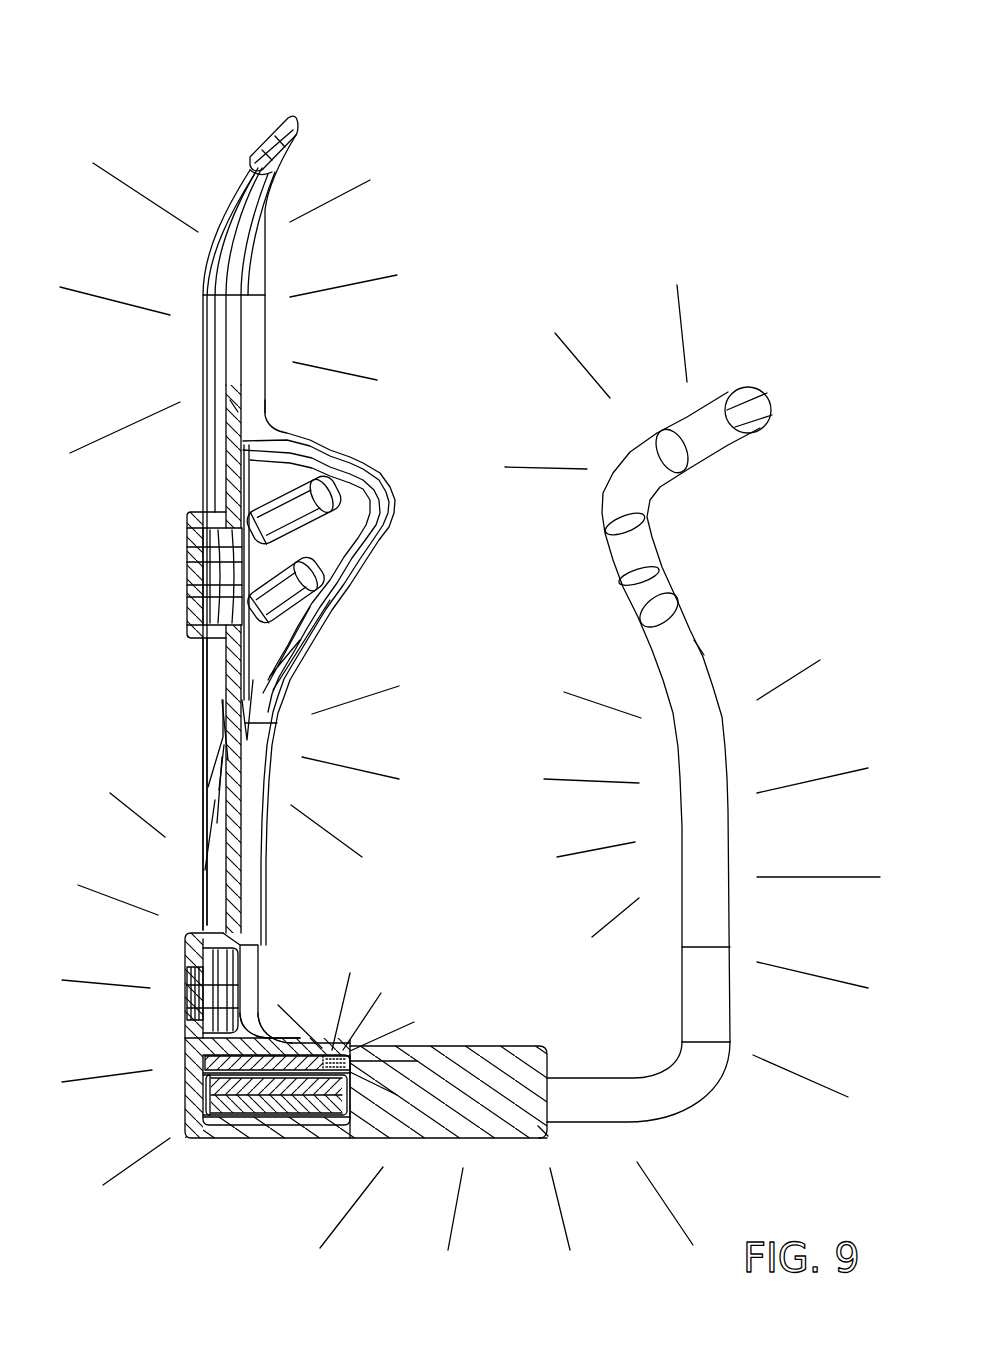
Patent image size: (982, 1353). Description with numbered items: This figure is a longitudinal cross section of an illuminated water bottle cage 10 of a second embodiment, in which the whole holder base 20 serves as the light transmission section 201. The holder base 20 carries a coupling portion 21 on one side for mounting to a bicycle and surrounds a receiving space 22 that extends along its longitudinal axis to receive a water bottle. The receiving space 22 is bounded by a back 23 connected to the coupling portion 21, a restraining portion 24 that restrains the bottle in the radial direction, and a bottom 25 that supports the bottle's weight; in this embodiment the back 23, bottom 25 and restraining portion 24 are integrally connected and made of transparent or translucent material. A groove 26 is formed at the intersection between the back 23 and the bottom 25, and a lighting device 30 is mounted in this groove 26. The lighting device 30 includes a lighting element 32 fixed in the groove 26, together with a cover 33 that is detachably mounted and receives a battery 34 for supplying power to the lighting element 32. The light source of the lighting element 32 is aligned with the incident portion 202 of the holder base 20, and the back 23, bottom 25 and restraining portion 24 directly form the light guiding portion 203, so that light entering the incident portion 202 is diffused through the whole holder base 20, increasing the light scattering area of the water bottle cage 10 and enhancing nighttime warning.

The illuminated water bottle cage 10 is at (357, 92).
The holder base 20 is at (493, 1162).
The coupling portion 21 is at (196, 578).
The receiving space 22 is at (474, 385).
The back 23 is at (268, 140).
The restraining portion 24 is at (748, 390).
The bottom 25 is at (457, 1048).
The groove 26 is at (287, 1126).
The lighting device 30 is at (331, 1008).
The lighting element 32 is at (347, 1050).
The cover 33 is at (216, 1128).
The battery 34 is at (205, 1088).
The light transmission section 201 is at (230, 742).
The incident portion 202 is at (315, 1028).
The light guiding portion 203 is at (229, 407).